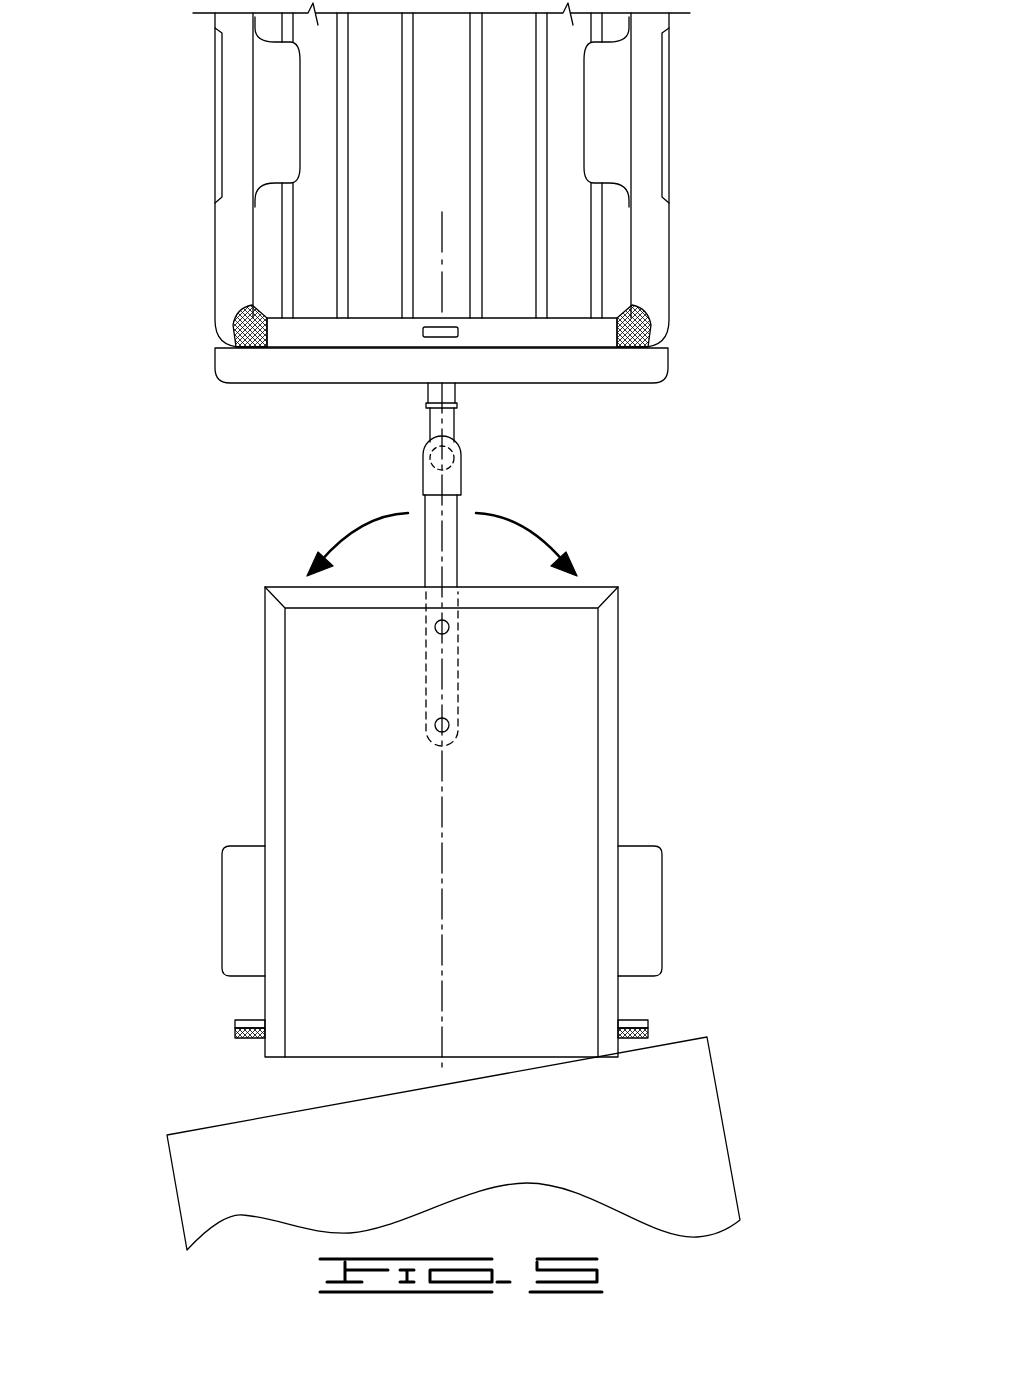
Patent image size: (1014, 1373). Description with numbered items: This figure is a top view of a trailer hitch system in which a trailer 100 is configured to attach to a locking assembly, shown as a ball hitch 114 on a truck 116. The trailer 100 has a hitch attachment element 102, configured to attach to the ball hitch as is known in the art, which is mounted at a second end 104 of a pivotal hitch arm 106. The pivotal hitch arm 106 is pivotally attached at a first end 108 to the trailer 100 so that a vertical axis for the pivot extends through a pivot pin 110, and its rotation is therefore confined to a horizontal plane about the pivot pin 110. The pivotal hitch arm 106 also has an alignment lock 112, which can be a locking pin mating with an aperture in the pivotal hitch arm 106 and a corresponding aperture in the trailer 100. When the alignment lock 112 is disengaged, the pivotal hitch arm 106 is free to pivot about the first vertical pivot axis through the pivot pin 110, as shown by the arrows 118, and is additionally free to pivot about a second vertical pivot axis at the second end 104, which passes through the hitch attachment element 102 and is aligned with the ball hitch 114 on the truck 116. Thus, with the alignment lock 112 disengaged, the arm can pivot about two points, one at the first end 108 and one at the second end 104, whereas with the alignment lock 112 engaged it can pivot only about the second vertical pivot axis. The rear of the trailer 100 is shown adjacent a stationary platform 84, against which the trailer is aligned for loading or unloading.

The truck 116 is at (215, 153).
The second end 104 is at (423, 452).
The hitch attachment element 102 is at (425, 483).
The ball hitch 114 is at (460, 453).
The pivotal hitch arm 106 is at (457, 560).
The arrows 118 is at (500, 515).
The trailer 100 is at (265, 803).
The first end 108 is at (458, 685).
The alignment lock 112 is at (449, 627).
The pivot pin 110 is at (435, 725).
The stationary platform 84 is at (717, 1080).